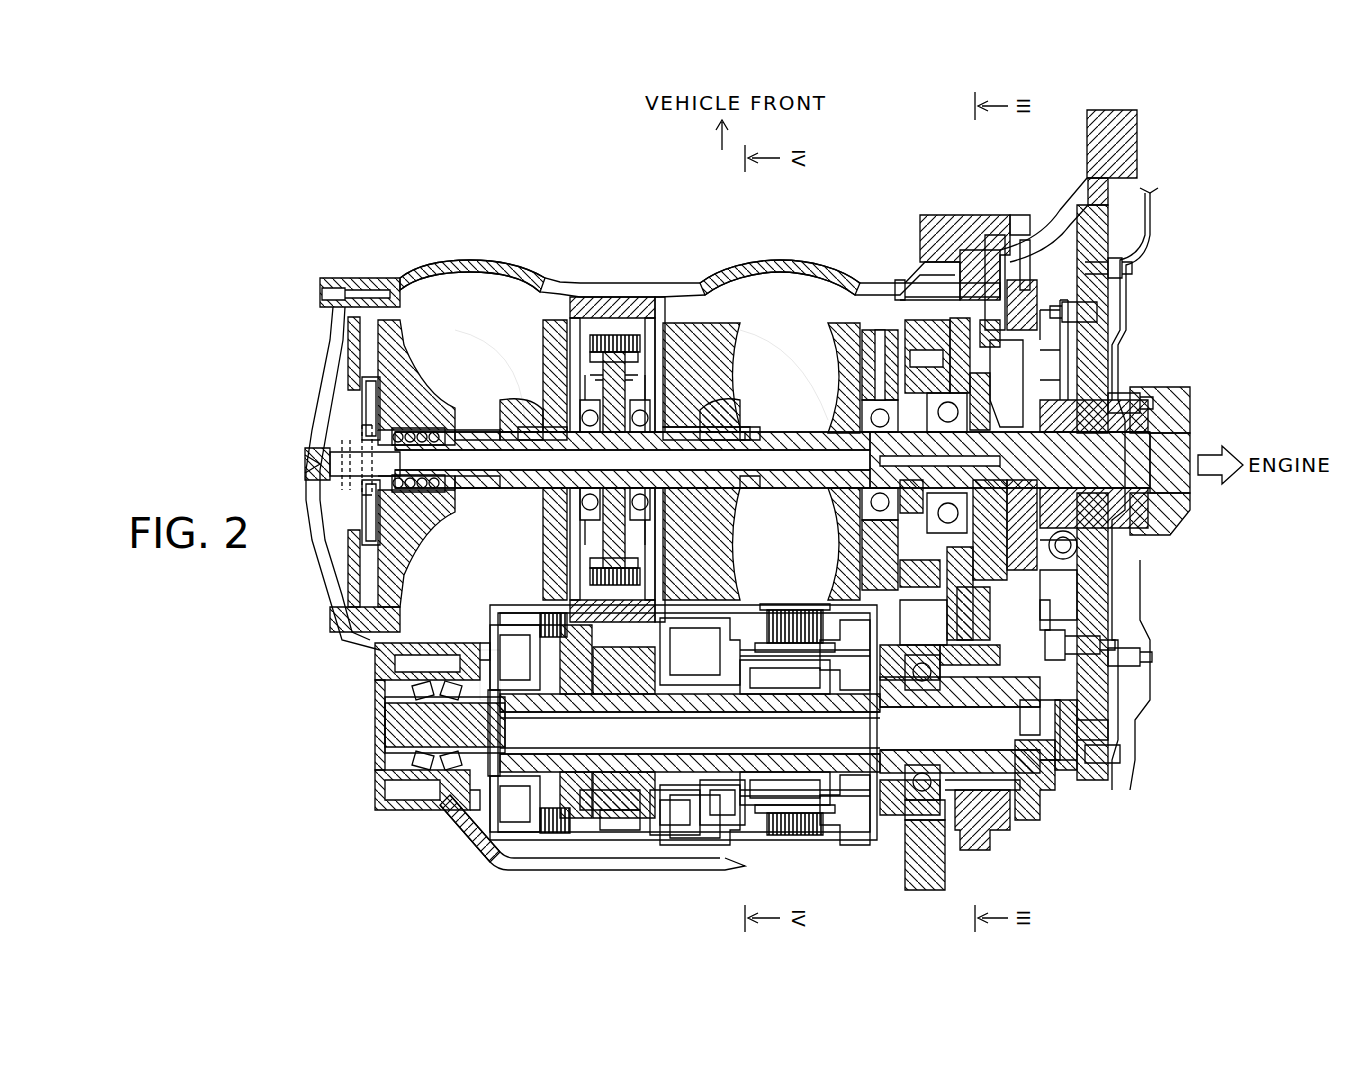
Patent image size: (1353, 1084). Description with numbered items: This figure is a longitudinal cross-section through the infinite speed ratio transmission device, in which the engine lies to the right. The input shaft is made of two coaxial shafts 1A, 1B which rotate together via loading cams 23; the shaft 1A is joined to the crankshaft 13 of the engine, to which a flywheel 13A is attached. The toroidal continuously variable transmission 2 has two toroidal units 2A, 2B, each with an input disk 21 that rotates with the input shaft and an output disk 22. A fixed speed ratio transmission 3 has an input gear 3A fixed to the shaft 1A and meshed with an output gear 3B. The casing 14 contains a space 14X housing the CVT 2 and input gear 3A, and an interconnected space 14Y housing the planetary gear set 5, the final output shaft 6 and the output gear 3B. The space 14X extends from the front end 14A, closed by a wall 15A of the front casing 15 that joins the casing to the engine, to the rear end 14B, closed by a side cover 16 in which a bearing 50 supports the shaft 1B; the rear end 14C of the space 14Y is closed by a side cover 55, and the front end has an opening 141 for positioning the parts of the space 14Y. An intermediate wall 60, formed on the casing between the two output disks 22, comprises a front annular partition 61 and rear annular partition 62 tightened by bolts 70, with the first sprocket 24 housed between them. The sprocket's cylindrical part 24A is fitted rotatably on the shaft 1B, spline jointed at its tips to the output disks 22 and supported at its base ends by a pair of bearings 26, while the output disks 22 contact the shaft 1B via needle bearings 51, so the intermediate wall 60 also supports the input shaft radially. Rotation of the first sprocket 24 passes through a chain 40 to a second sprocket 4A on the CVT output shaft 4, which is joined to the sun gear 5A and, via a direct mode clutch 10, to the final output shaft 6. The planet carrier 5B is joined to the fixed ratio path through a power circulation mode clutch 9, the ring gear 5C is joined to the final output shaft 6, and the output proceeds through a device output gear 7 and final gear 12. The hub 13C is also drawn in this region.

The shaft 1A is at (1107, 483).
The shaft 1B is at (748, 444).
The toroidal continuously variable transmission 2 is at (720, 290).
The toroidal unit 2A is at (781, 294).
The toroidal unit 2B is at (480, 305).
The fixed speed ratio transmission 3 is at (975, 860).
The input gear 3A is at (922, 350).
The output gear 3B is at (945, 878).
The CVT output shaft 4 is at (580, 842).
The second sprocket 4A is at (624, 832).
The planetary gear set 5 is at (713, 862).
The sun gear 5A is at (728, 842).
The planet carrier 5B is at (690, 640).
The ring gear 5C is at (678, 835).
The final output shaft 6 is at (1070, 706).
The device output gear 7 is at (1085, 660).
The power circulation mode clutch 9 is at (802, 594).
The direct mode clutch 10 is at (518, 594).
The final gear 12 is at (995, 828).
The crankshaft 13 is at (1148, 408).
The flywheel 13A is at (1080, 700).
The hub 13C is at (852, 800).
The casing 14 is at (408, 265).
The front end 14A is at (930, 310).
The rear end 14B is at (370, 610).
The rear end 14C is at (378, 782).
The space 14X is at (470, 602).
The space 14Y is at (640, 887).
The opening 141 is at (808, 880).
The front casing 15 is at (1040, 195).
The wall 15A is at (1100, 275).
The side cover 16 is at (333, 372).
The input disk 21 is at (432, 372).
The output disk 22 is at (545, 345).
The loading cam 23 is at (870, 330).
The first sprocket 24 is at (620, 350).
The cylindrical part 24A is at (535, 420).
The bearing 26 is at (555, 390).
The chain 40 is at (610, 332).
The bearing 50 is at (330, 440).
The needle bearing 51 is at (495, 492).
The side cover 55 is at (385, 683).
The intermediate wall 60 is at (577, 295).
The front annular partition 61 is at (690, 545).
The rear annular partition 62 is at (557, 548).
The bolt 70 is at (662, 300).